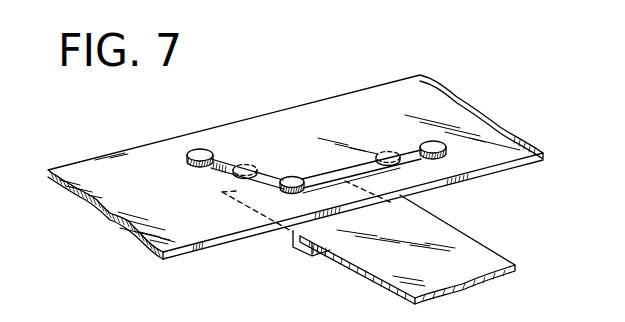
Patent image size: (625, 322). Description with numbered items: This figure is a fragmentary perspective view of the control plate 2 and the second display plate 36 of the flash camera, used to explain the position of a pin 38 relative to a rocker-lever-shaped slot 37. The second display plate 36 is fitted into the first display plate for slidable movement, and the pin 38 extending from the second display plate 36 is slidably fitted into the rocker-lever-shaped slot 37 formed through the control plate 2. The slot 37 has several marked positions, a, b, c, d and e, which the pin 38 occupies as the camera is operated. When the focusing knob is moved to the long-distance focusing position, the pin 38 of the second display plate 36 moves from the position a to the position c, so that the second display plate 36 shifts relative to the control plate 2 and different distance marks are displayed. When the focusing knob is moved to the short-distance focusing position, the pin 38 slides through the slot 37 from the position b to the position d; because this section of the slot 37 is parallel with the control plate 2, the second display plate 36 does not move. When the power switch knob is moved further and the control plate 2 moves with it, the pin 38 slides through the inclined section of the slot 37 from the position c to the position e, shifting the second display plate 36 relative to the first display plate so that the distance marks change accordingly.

The control plate 2 is at (341, 113).
The second display plate 36 is at (378, 250).
The rocker-lever-shaped slot 37 is at (417, 157).
The pin 38 is at (291, 191).
The position a is at (292, 163).
The position b is at (429, 123).
The position c is at (249, 149).
The position d is at (385, 134).
The position e is at (200, 135).